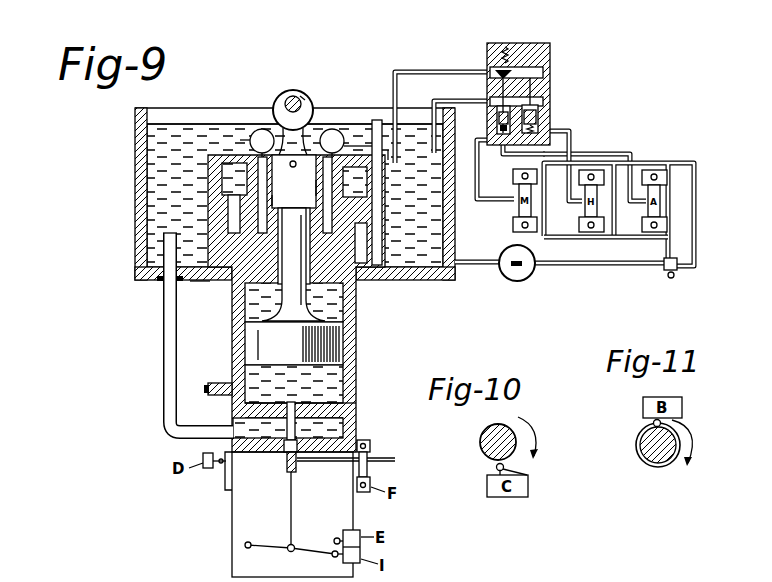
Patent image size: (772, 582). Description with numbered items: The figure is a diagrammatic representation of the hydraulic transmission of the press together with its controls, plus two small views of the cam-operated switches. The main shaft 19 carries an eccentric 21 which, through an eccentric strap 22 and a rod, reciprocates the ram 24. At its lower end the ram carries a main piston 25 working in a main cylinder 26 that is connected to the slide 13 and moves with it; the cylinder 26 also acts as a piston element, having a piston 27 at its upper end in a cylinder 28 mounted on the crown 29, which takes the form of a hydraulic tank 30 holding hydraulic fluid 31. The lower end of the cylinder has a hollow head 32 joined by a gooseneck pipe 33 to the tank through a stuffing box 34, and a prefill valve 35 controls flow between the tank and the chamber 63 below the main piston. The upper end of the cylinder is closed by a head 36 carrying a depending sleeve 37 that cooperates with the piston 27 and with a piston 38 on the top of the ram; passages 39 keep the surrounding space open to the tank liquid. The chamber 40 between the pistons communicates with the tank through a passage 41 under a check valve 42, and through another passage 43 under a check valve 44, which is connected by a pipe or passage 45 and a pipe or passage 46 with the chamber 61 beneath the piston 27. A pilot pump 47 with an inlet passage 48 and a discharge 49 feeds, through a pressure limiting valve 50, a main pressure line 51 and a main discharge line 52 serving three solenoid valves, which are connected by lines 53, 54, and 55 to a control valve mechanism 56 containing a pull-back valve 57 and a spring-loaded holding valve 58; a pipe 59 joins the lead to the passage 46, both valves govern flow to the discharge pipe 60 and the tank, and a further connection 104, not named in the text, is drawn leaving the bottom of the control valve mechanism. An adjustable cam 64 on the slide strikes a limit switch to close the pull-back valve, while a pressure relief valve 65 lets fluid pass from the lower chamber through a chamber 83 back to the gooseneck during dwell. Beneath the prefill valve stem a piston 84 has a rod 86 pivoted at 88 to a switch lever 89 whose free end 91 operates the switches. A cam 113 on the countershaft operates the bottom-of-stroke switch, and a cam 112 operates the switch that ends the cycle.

In FIG. 9, the slide 13 is at (241, 527).
In FIG. 9, the main shaft 19 is at (300, 96).
In FIG. 10, the main shaft 19 is at (497, 468).
In FIG. 11, the main shaft 19 is at (650, 453).
In FIG. 9, the eccentric 21 is at (281, 106).
In FIG. 9, the eccentric strap 22 is at (303, 98).
In FIG. 9, the ram 24 is at (293, 264).
In FIG. 9, the main piston 25 is at (257, 338).
In FIG. 9, the main cylinder 26 is at (352, 345).
In FIG. 9, the piston 27 is at (366, 214).
In FIG. 9, the cylinder 28 is at (368, 234).
In FIG. 9, the crown 29 is at (400, 281).
In FIG. 9, the hydraulic tank 30 is at (147, 208).
In FIG. 9, the hydraulic fluid 31 is at (147, 164).
In FIG. 9, the hollow head 32 is at (357, 413).
In FIG. 9, the gooseneck pipe 33 is at (165, 352).
In FIG. 9, the stuffing box 34 is at (137, 273).
In FIG. 9, the prefill valve 35 is at (330, 428).
In FIG. 9, the head 36 is at (388, 150).
In FIG. 9, the depending sleeve 37 is at (334, 128).
In FIG. 9, the piston 38 is at (294, 181).
In FIG. 9, the passages 39 is at (233, 160).
In FIG. 9, the chamber 40 is at (246, 295).
In FIG. 9, the passage 41 is at (268, 200).
In FIG. 9, the check valve 42 is at (261, 155).
In FIG. 9, the passage 43 is at (322, 188).
In FIG. 9, the check valve 44 is at (328, 155).
In FIG. 9, the pipe or passage 45 is at (374, 130).
In FIG. 9, the pipe or passage 46 is at (396, 170).
In FIG. 9, the pilot pump 47 is at (532, 272).
In FIG. 9, the inlet passage 48 is at (461, 266).
In FIG. 9, the discharge 49 is at (594, 266).
In FIG. 9, the pressure limiting valve 50 is at (666, 271).
In FIG. 9, the main pressure line 51 is at (696, 178).
In FIG. 9, the main discharge line 52 is at (614, 239).
In FIG. 9, the line 53 is at (613, 152).
In FIG. 9, the line 54 is at (572, 133).
In FIG. 9, the line 55 is at (478, 185).
In FIG. 9, the control valve mechanism 56 is at (550, 58).
In FIG. 9, the pull-back valve 57 is at (504, 46).
In FIG. 9, the holding valve 58 is at (551, 117).
In FIG. 9, the pipe 59 is at (437, 74).
In FIG. 9, the discharge pipe 60 is at (466, 99).
In FIG. 9, the chamber 61 is at (197, 283).
In FIG. 9, the chamber 63 is at (255, 374).
In FIG. 9, the adjustable cam 64 is at (228, 452).
In FIG. 9, the pressure relief valve 65 is at (222, 382).
In FIG. 9, the chamber 83 is at (345, 405).
In FIG. 9, the piston 84 is at (286, 456).
In FIG. 9, the rod 86 is at (292, 500).
In FIG. 9, the pivot 88 is at (293, 548).
In FIG. 9, the switch lever 89 is at (289, 548).
In FIG. 9, the free end 91 is at (332, 554).
In FIG. 9, the passage 104 is at (500, 152).
In FIG. 11, the cam 112 is at (680, 422).
In FIG. 10, the cam 113 is at (481, 444).